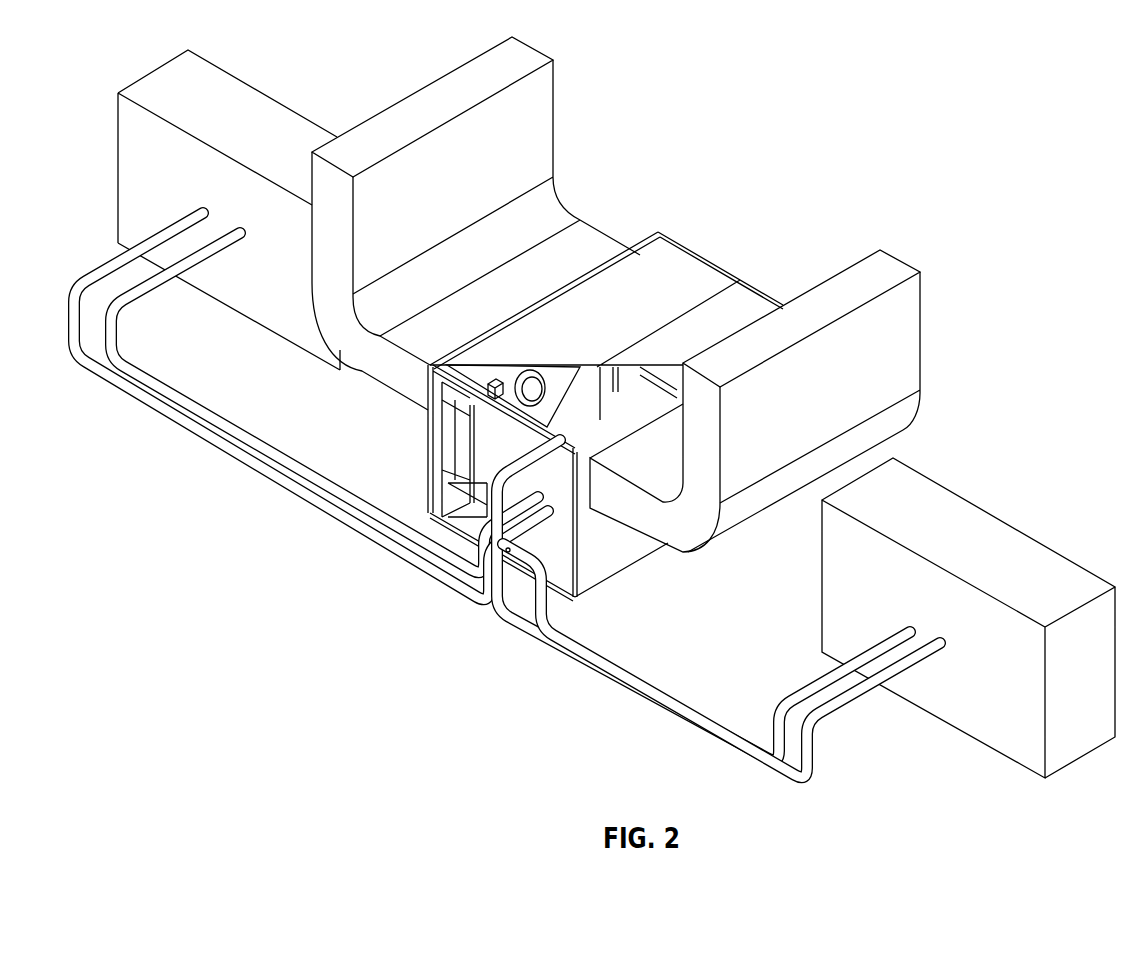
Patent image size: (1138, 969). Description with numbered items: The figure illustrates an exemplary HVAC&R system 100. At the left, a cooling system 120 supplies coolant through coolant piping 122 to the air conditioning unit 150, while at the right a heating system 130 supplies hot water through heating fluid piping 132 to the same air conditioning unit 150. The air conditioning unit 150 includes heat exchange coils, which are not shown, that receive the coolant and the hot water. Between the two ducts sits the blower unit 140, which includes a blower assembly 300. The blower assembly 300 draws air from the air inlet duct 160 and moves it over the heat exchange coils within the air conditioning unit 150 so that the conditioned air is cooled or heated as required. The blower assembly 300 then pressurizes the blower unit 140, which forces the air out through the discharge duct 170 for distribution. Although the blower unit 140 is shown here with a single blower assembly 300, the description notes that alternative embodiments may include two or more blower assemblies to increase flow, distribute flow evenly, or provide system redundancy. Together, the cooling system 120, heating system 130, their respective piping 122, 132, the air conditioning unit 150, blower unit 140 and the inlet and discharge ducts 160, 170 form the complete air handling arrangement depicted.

The HVAC&R system 100 is at (594, 407).
The cooling system 120 is at (258, 93).
The coolant piping 122 is at (172, 421).
The heating system 130 is at (1017, 532).
The heating fluid piping 132 is at (623, 682).
The blower unit 140 is at (577, 403).
The air conditioning unit 150 is at (768, 292).
The air inlet duct 160 is at (921, 340).
The discharge duct 170 is at (556, 128).
The blower assembly 300 is at (458, 430).